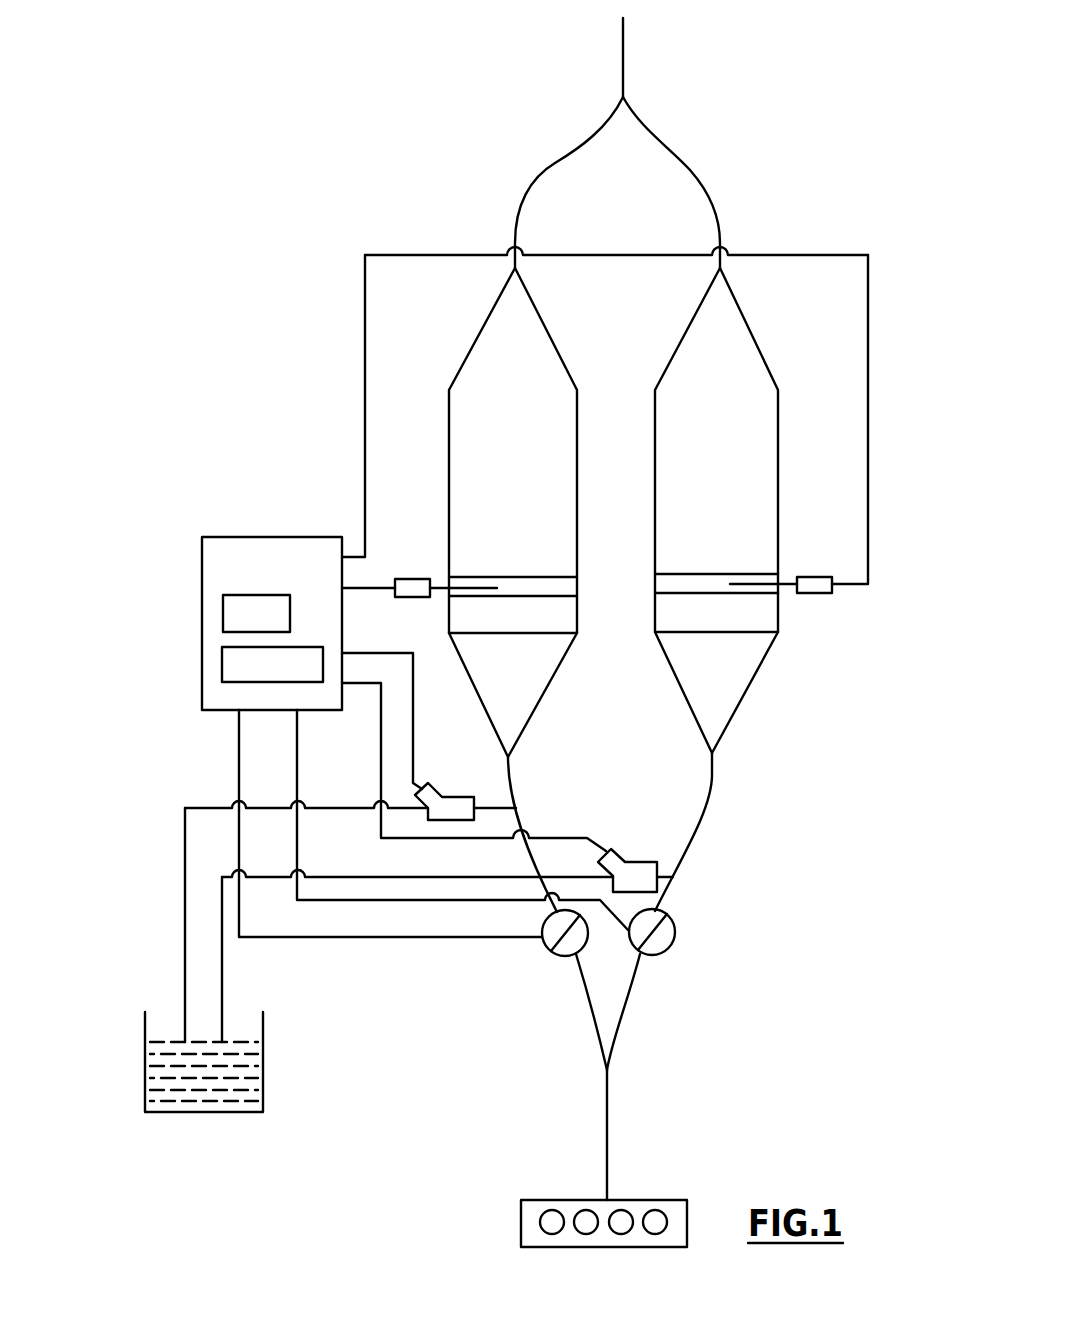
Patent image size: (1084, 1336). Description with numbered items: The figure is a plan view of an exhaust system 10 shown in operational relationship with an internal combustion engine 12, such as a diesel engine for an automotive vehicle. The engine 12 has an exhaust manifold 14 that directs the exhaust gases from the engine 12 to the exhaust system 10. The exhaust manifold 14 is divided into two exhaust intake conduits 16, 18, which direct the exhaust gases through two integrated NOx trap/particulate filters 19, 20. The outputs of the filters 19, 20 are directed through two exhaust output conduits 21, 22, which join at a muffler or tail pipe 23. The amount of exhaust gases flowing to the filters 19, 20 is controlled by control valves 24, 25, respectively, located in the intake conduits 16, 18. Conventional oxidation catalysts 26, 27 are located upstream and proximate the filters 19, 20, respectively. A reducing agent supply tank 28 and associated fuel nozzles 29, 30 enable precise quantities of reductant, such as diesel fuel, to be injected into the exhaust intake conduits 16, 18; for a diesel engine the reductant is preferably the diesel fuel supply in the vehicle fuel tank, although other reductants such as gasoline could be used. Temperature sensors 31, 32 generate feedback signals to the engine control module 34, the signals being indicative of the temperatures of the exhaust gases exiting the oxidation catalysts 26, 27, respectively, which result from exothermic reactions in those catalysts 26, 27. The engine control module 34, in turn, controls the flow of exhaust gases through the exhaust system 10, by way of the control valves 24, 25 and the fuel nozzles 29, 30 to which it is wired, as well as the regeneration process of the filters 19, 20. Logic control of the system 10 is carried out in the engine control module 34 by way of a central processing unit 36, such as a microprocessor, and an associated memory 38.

The exhaust system 10 is at (388, 201).
The internal combustion engine 12 is at (539, 1198).
The exhaust manifold 14 is at (604, 1132).
The exhaust intake conduit 16 is at (513, 772).
The exhaust intake conduit 18 is at (714, 772).
The integrated NOx trap/particulate filter 19 is at (449, 415).
The integrated NOx trap/particulate filter 20 is at (655, 428).
The exhaust output conduit 21 is at (577, 158).
The exhaust output conduit 22 is at (690, 177).
The muffler or tail pipe 23 is at (628, 51).
The control valve 24 is at (541, 948).
The control valve 25 is at (676, 942).
The oxidation catalyst 26 is at (571, 612).
The oxidation catalyst 27 is at (651, 618).
The reducing agent supply tank 28 is at (252, 1075).
The fuel nozzle 29 is at (458, 794).
The fuel nozzle 30 is at (637, 860).
The temperature sensor 31 is at (405, 577).
The temperature sensor 32 is at (809, 576).
The engine control module 34 is at (247, 536).
The central processing unit 36 is at (223, 608).
The memory 38 is at (222, 663).